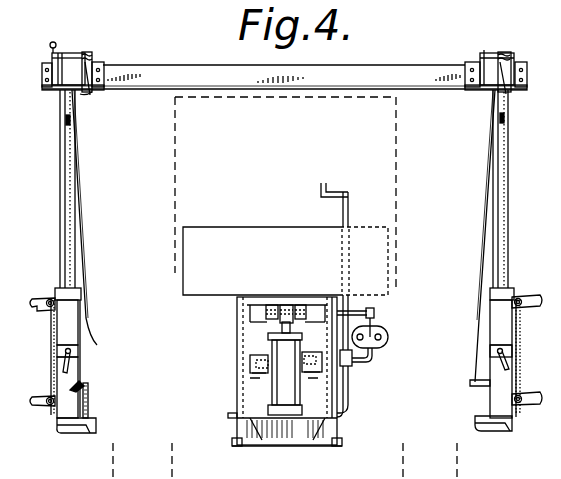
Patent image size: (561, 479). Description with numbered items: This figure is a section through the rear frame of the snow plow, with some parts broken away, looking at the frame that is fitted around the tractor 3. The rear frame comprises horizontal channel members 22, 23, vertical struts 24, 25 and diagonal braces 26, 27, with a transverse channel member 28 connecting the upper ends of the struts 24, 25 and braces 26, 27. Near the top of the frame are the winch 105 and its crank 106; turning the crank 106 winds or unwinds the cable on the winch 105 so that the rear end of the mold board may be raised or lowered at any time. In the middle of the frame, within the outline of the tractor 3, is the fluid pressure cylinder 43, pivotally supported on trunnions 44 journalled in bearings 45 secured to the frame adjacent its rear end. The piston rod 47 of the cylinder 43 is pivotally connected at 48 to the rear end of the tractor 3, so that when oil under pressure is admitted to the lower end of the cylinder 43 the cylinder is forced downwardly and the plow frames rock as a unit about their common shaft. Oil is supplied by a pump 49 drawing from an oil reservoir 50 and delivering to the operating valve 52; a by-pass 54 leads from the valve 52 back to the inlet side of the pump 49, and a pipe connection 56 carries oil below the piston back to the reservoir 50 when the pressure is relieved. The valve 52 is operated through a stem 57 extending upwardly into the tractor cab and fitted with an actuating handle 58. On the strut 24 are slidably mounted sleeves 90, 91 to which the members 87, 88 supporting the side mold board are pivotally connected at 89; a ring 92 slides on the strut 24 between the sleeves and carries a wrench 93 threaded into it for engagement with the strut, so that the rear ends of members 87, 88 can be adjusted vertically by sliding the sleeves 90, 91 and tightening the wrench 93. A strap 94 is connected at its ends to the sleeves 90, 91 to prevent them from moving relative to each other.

The tractor 3 is at (409, 118).
The horizontal channel member 22 is at (91, 400).
The horizontal channel member 23 is at (476, 402).
The vertical strut 24 is at (66, 219).
The vertical strut 25 is at (508, 211).
The diagonal brace 26 is at (85, 261).
The diagonal brace 27 is at (60, 125).
The transverse channel member 28 is at (208, 68).
The fluid pressure cylinder 43 is at (278, 350).
The trunnions 44 is at (266, 356).
The bearings 45 is at (255, 367).
The piston rod 47 is at (307, 322).
The pivotal connection 48 is at (263, 306).
The pump 49 is at (389, 336).
The oil reservoir 50 is at (389, 247).
The operating valve 52 is at (358, 366).
The by-pass 54 is at (358, 314).
The pipe connection 56 is at (348, 397).
The valve stem 57 is at (355, 210).
The actuating handle 58 is at (337, 186).
The member 87 is at (47, 310).
The member 88 is at (33, 407).
The pivotal connection 89 is at (50, 300).
The sleeve 90 is at (81, 299).
The sleeve 91 is at (90, 384).
The ring 92 is at (62, 351).
The wrench 93 is at (65, 366).
The strap 94 is at (55, 330).
The winch 105 is at (78, 51).
The crank 106 is at (90, 95).